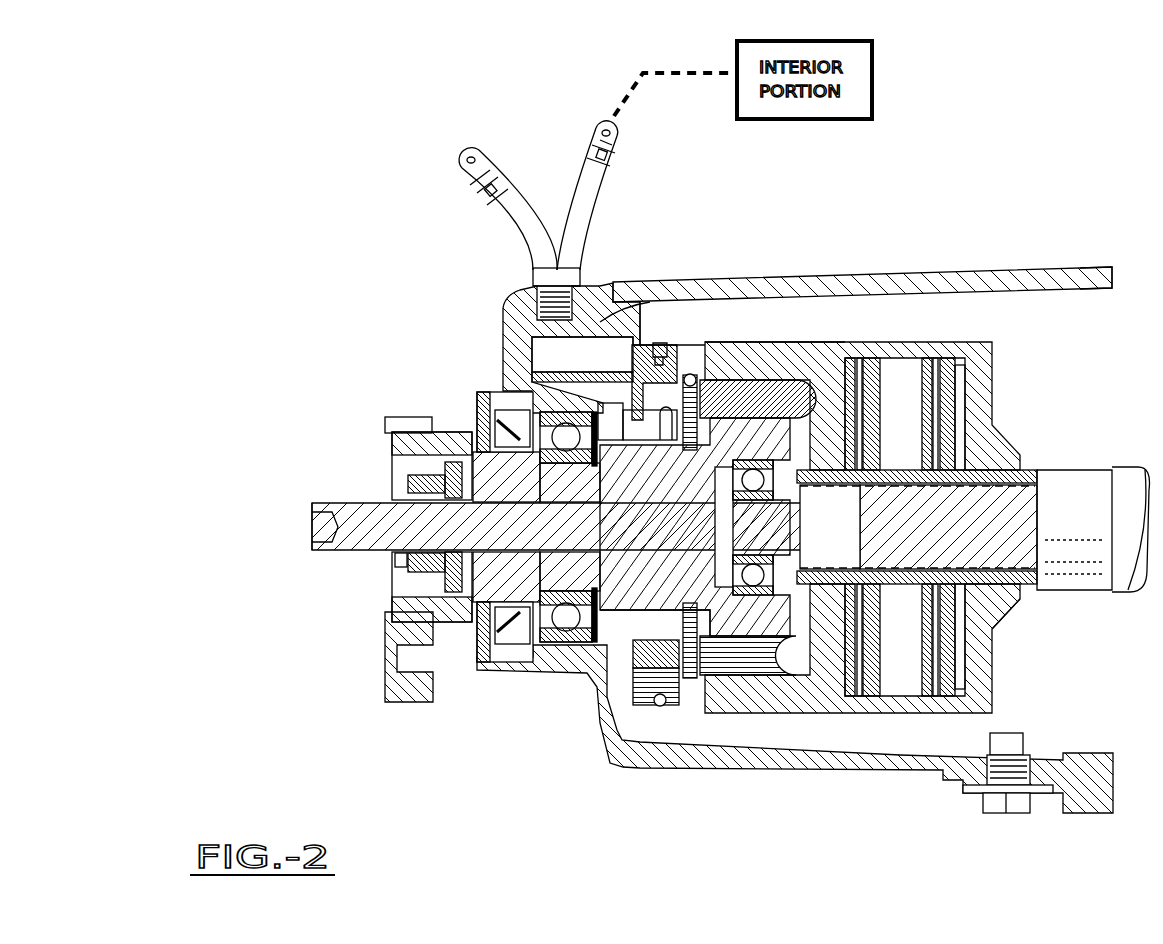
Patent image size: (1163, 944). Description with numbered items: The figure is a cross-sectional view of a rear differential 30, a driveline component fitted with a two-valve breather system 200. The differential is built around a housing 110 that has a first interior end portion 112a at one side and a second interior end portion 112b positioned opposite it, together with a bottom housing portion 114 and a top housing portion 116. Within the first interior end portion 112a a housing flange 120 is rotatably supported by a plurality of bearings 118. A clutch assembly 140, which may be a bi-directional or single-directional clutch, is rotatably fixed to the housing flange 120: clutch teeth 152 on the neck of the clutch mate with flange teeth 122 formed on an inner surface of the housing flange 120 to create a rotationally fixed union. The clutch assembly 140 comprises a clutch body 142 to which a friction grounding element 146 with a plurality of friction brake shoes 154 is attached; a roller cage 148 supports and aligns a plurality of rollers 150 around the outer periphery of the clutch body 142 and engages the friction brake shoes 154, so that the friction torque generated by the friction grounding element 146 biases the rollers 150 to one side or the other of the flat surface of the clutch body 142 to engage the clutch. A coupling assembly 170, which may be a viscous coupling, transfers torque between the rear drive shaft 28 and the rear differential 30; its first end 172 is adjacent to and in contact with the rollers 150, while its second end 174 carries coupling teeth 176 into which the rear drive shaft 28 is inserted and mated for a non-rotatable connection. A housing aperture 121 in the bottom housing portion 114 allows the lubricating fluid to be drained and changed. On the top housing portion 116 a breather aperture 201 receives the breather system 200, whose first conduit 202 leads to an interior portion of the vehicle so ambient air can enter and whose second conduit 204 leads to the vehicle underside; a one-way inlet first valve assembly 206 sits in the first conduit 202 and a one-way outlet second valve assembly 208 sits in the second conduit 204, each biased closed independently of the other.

The rear drive shaft 28 is at (1082, 482).
The rear differential 30 is at (641, 268).
The housing 110 is at (878, 282).
The first interior end portion 112a is at (320, 586).
The second interior end portion 112b is at (1032, 618).
The bottom housing portion 114 is at (566, 748).
The top housing portion 116 is at (1050, 267).
The bearings 118 is at (563, 632).
The housing flange 120 is at (408, 440).
The housing aperture 121 is at (1025, 750).
The flange teeth 122 is at (470, 622).
The clutch assembly 140 is at (727, 428).
The clutch body 142 is at (748, 625).
The friction grounding element 146 is at (583, 355).
The roller cage 148 is at (773, 392).
The rollers 150 is at (785, 410).
The clutch teeth 152 is at (480, 493).
The friction brake shoes 154 is at (668, 355).
The coupling assembly 170 is at (988, 348).
The first end 172 is at (720, 330).
The second end 174 is at (1000, 390).
The coupling teeth 176 is at (1003, 476).
The breather system 200 is at (547, 195).
The breather aperture 201 is at (533, 293).
The first conduit 202 is at (592, 195).
The second conduit 204 is at (515, 210).
The first valve assembly 206 is at (618, 133).
The second valve assembly 208 is at (486, 200).